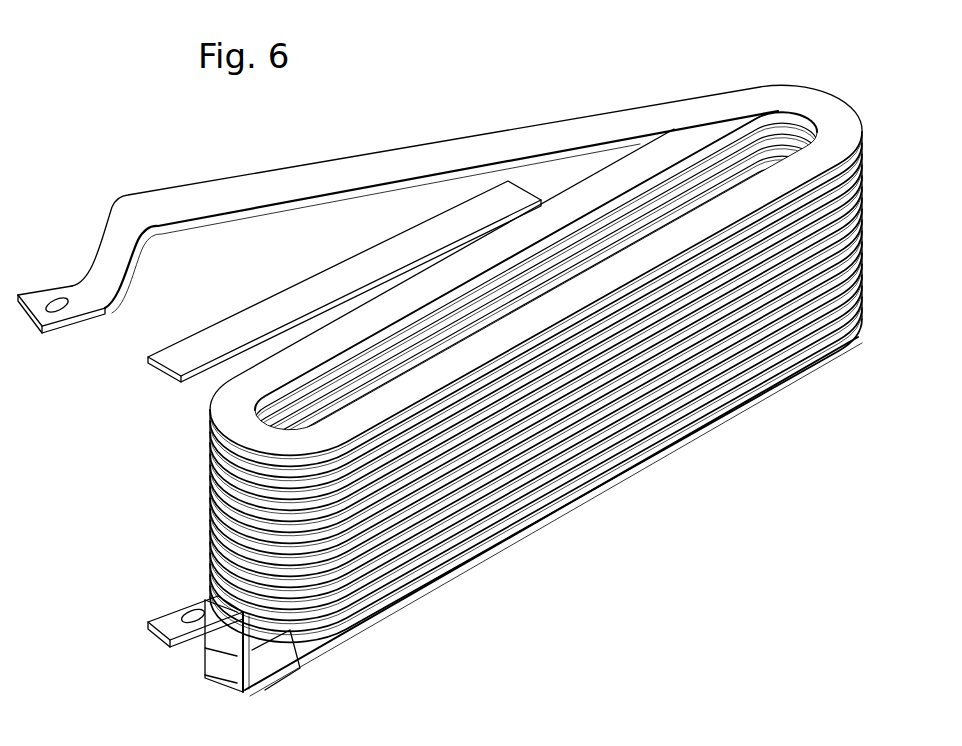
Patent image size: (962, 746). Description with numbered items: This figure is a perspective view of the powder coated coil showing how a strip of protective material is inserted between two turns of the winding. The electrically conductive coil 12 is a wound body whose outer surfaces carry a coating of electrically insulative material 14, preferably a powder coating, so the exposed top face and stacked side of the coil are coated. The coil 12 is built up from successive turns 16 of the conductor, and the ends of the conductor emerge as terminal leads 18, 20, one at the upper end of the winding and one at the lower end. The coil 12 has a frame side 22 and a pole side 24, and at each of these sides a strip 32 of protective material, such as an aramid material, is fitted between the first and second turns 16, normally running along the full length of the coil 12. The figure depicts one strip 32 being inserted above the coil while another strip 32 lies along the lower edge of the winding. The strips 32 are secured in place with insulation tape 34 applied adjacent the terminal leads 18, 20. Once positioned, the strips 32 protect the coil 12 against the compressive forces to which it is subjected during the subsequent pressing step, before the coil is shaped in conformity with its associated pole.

The electrically conductive coil 12 is at (864, 94).
The coating of electrically insulative material 14 is at (852, 338).
The turns 16 is at (562, 132).
The terminal lead 18 is at (93, 310).
The terminal lead 20 is at (150, 634).
The frame side 22 is at (680, 66).
The pole side 24 is at (697, 460).
The strip of protective material 32 is at (216, 322).
The insulation tape 34 is at (262, 695).